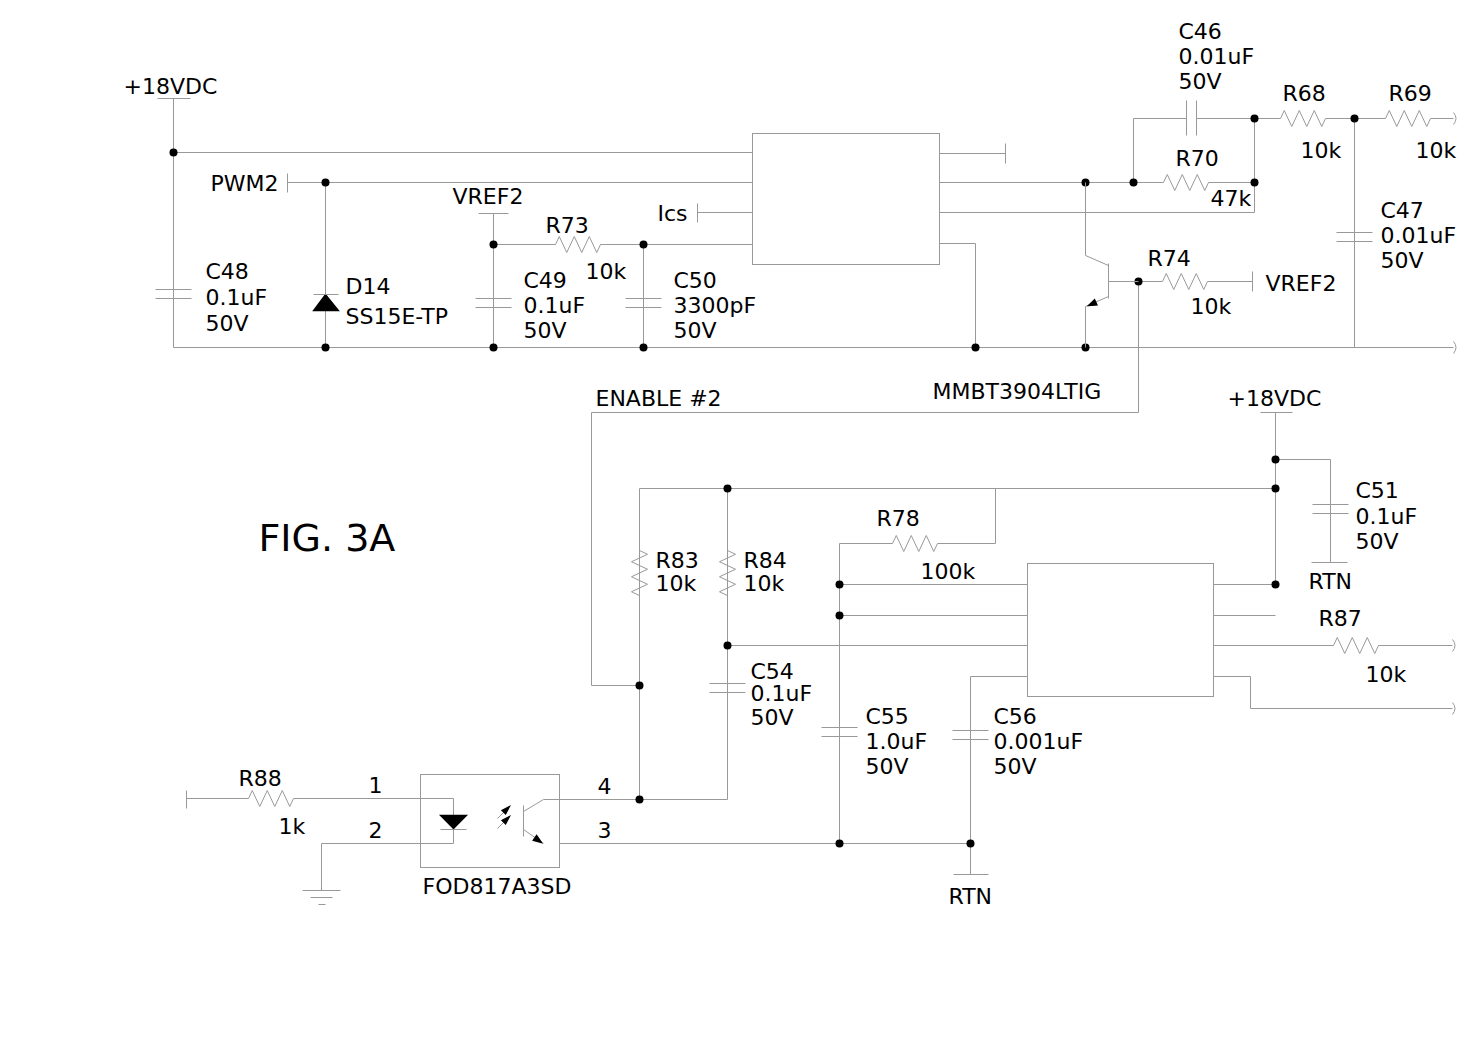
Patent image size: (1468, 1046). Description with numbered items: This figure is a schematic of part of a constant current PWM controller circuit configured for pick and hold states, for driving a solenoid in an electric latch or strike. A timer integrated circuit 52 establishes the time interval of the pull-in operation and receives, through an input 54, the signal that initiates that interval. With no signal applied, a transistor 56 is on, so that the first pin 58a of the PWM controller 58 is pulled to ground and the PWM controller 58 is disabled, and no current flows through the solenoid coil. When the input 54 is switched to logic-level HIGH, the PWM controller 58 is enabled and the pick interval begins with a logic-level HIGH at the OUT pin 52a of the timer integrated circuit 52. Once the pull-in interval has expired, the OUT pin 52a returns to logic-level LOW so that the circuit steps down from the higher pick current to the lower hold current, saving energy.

The PWM controller 58 is at (930, 132).
The Pin 1 of PWM controller 58a is at (940, 157).
The transistor 56 is at (1095, 262).
The input 54 is at (147, 785).
The timer integrated circuit 52 is at (1100, 696).
The OUT pin of timer integrated circuit 52a is at (1245, 676).